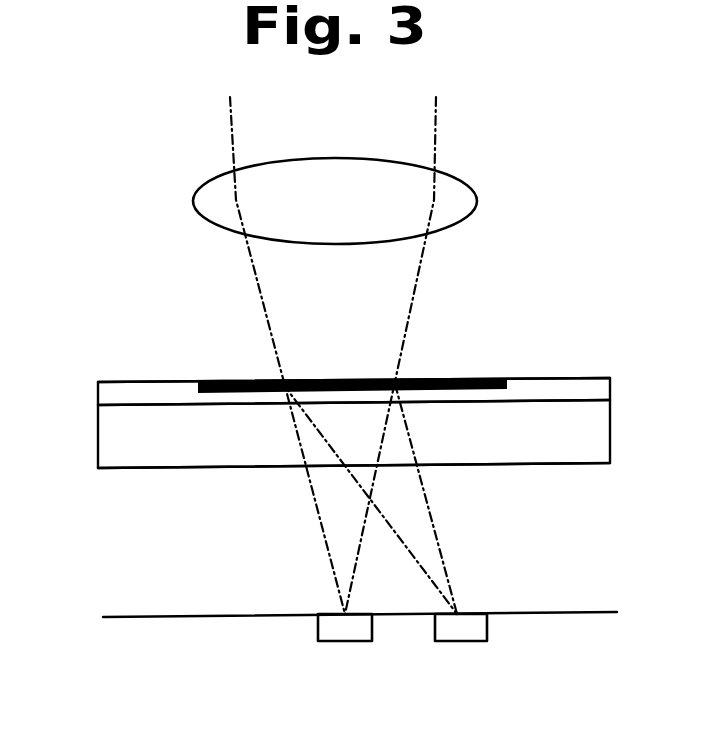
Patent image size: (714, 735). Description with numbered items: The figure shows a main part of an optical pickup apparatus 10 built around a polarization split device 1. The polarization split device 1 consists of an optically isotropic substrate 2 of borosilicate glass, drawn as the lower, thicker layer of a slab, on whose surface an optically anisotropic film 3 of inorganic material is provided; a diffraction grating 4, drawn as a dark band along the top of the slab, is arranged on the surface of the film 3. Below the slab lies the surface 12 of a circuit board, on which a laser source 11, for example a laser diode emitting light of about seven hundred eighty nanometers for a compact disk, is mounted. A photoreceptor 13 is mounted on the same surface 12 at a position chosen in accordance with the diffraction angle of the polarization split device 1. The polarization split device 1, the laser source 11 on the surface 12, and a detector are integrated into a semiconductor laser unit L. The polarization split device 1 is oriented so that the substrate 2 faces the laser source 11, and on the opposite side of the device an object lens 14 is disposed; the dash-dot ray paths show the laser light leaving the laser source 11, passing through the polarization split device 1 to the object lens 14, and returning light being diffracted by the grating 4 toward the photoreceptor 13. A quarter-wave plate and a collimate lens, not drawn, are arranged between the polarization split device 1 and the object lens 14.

The object lens 14 is at (452, 178).
The optical pickup apparatus 10 is at (628, 282).
The polarization split device 1 is at (619, 436).
The optically isotropic substrate 2 is at (110, 446).
The optically anisotropic film 3 is at (110, 392).
The diffraction grating 4 is at (478, 376).
The surface of a circuit board 12 is at (120, 616).
The semiconductor laser unit L is at (552, 581).
The laser source 11 is at (349, 643).
The photoreceptor 13 is at (466, 643).